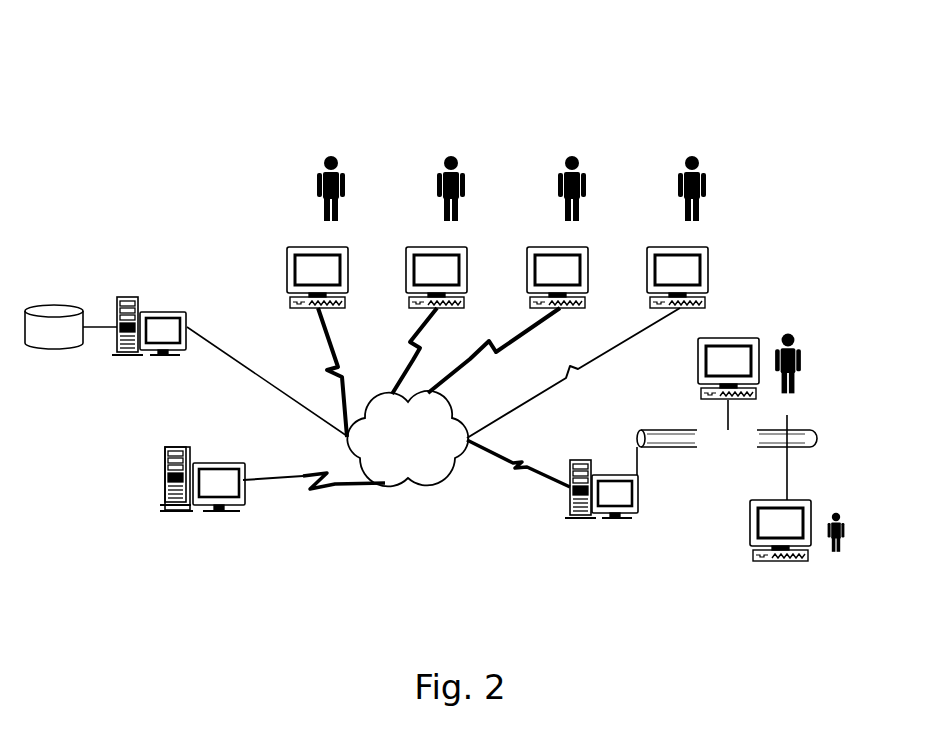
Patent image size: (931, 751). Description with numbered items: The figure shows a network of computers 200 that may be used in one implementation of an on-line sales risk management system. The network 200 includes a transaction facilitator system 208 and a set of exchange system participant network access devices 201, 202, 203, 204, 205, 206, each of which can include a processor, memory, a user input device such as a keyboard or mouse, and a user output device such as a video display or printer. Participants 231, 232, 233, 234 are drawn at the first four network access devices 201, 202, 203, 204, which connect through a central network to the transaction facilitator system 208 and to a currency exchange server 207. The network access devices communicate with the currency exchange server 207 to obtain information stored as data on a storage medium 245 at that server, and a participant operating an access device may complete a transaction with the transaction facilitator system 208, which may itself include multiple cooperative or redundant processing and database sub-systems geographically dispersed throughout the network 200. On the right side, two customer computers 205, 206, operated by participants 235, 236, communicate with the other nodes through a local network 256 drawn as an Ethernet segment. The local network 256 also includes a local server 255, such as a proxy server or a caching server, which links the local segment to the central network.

The network of computers 200 is at (193, 45).
The exchange system participant network access device 201 is at (317, 277).
The exchange system participant network access device 202 is at (436, 277).
The exchange system participant network access device 203 is at (557, 277).
The exchange system participant network access device 204 is at (677, 277).
The customer computer 205 is at (728, 368).
The customer computer 206 is at (780, 530).
The currency exchange server 207 is at (148, 337).
The transaction facilitator system 208 is at (200, 516).
The participant 231 is at (313, 147).
The participant 232 is at (432, 147).
The participant 233 is at (557, 143).
The participant 234 is at (681, 143).
The participant 235 is at (807, 363).
The participant 236 is at (831, 556).
The storage medium 245 is at (71, 327).
The local server 255 is at (601, 501).
The local network 256 is at (746, 450).